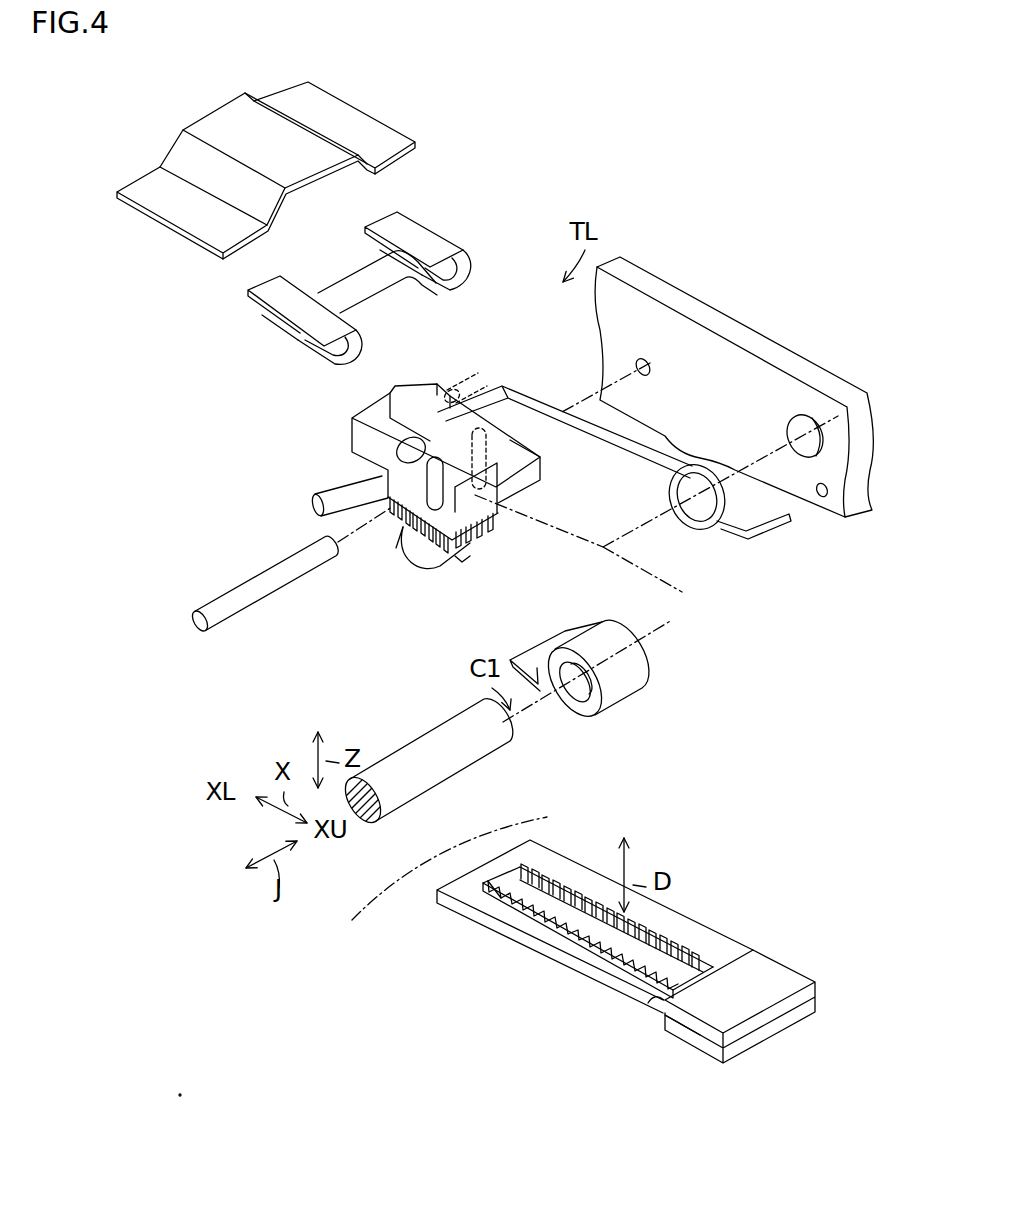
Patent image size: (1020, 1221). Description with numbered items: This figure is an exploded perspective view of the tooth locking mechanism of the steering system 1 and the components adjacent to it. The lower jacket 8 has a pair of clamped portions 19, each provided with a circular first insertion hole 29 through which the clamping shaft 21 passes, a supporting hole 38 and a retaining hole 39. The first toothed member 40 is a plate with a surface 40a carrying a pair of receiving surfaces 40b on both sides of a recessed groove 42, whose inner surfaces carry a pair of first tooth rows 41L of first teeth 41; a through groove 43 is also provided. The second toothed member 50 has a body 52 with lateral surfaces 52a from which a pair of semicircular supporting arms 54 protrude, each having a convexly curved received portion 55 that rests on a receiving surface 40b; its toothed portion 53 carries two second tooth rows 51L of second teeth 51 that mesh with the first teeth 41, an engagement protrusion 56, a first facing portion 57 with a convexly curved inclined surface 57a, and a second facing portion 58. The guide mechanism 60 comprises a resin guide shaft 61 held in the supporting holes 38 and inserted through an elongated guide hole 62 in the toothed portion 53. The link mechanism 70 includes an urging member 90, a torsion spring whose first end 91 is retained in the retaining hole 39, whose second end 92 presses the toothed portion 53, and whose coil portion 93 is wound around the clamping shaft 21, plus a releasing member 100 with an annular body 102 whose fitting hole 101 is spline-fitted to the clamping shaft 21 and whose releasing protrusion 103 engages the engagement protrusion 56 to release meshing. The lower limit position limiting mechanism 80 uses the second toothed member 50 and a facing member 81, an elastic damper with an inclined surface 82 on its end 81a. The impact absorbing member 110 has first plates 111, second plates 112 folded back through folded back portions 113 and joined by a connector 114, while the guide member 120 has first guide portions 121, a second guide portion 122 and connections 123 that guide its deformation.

The steering system 1 is at (690, 265).
The lower jacket 8 is at (736, 313).
The clamped portion 19 is at (785, 346).
The clamping shaft 21 is at (418, 752).
The first insertion hole 29 is at (786, 436).
The supporting hole 38 is at (640, 360).
The retaining hole 39 is at (820, 500).
The first toothed member 40 is at (456, 963).
The surface 40a is at (672, 925).
The receiving surface 40b is at (548, 852).
The first teeth 41 is at (572, 950).
The first tooth row 41L is at (521, 918).
The recessed groove 42 is at (580, 880).
The through groove 43 is at (698, 955).
The second toothed member 50 is at (340, 440).
The second teeth 51 is at (500, 494).
The second tooth row 51L is at (506, 531).
The body 52 is at (352, 463).
The lateral surface 52a is at (405, 395).
The toothed portion 53 is at (480, 542).
The supporting arm 54 is at (452, 392).
The received portion 55 is at (505, 398).
The engagement protrusion 56 is at (531, 457).
The first facing portion 57 is at (430, 570).
The inclined surface 57a is at (458, 562).
The second facing portion 58 is at (418, 402).
The guide mechanism 60 is at (367, 646).
The guide shaft 61 is at (288, 575).
The guide hole 62 is at (398, 530).
The link mechanism 70 is at (782, 614).
The lower limit position limiting mechanism 80 is at (736, 1004).
The facing member 81 is at (770, 986).
The end 81a is at (665, 1017).
The inclined surface 82 is at (660, 1004).
The urging member 90 is at (715, 535).
The first end 91 is at (787, 518).
The second end 92 is at (488, 380).
The coil portion 93 is at (668, 497).
The releasing member 100 is at (642, 661).
The fitting hole 101 is at (575, 690).
The body 102 is at (622, 702).
The releasing protrusion 103 is at (544, 648).
The impact absorbing member 110 is at (451, 222).
The first plate 111 is at (403, 228).
The second plate 112 is at (300, 340).
The folded back portion 113 is at (340, 343).
The connector 114 is at (347, 290).
The guide member 120 is at (392, 122).
The first guide portion 121 is at (333, 100).
The second guide portion 122 is at (227, 120).
The connection 123 is at (280, 107).